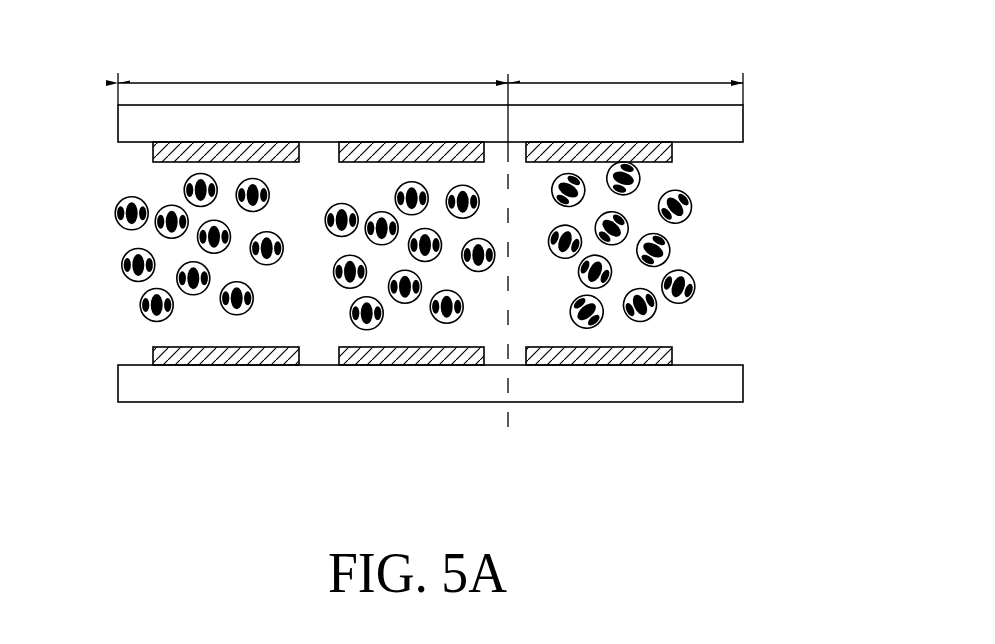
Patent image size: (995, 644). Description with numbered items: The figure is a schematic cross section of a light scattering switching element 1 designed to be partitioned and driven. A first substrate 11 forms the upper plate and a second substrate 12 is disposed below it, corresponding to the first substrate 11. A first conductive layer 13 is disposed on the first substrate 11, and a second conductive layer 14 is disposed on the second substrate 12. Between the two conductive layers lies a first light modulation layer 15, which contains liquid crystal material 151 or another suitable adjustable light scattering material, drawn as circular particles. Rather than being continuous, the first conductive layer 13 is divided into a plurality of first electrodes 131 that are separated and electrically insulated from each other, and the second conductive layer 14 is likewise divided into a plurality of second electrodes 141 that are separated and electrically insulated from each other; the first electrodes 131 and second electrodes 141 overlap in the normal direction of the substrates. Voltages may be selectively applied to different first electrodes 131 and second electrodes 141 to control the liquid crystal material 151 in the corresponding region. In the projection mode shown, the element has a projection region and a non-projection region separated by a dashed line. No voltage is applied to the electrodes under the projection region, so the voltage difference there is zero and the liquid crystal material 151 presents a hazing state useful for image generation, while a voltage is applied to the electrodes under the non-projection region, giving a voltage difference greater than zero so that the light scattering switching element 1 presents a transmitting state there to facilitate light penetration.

The light scattering switching element 1 is at (38, 53).
The first substrate 11 is at (743, 122).
The second substrate 12 is at (733, 385).
The first conductive layer 13 is at (521, 154).
The first electrodes 131 is at (672, 152).
The second conductive layer 14 is at (521, 349).
The second electrodes 141 is at (672, 350).
The first light modulation layer 15 is at (107, 153).
The liquid crystal material 151 is at (695, 285).